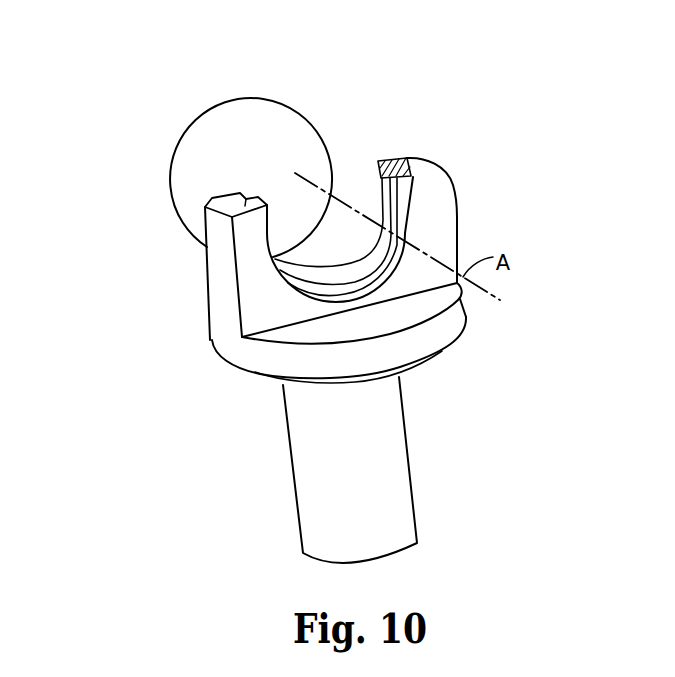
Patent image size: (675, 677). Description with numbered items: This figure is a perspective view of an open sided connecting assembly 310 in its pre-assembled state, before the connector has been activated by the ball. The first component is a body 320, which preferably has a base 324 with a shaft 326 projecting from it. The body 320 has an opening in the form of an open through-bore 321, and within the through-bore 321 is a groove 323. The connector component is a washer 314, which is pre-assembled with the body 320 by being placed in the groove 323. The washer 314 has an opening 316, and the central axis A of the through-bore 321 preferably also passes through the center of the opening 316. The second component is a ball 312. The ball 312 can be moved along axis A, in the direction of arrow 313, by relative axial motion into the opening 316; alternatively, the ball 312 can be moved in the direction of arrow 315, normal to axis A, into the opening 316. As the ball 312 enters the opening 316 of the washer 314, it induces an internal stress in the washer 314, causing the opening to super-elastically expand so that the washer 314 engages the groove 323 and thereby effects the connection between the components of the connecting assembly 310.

The connecting assembly 310 is at (550, 78).
The ball 312 is at (228, 123).
The arrow 313 is at (140, 139).
The washer 314 is at (390, 158).
The arrow 315 is at (309, 72).
The opening 316 is at (380, 192).
The body 320 is at (217, 285).
The through-bore 321 is at (444, 220).
The groove 323 is at (402, 158).
The base 324 is at (277, 363).
The shaft 326 is at (313, 483).